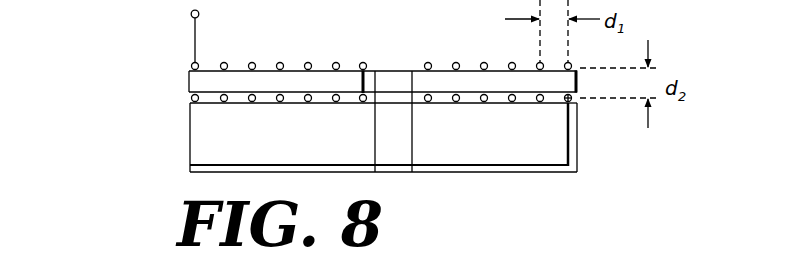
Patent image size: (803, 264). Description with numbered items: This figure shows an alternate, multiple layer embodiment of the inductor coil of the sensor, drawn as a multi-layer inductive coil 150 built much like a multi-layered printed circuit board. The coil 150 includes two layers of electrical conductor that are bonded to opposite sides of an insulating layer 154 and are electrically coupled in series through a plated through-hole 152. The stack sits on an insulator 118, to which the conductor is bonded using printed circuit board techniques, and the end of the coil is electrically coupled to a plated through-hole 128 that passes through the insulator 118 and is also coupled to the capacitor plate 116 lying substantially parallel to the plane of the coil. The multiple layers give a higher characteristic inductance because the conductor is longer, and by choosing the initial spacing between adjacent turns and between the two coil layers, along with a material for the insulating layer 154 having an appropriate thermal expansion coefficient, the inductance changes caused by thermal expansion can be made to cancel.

The multiple layer inductive coil 150 is at (156, 49).
The plated through-hole 152 is at (360, 77).
The insulating layer 154 is at (200, 79).
The plated through-hole 128 is at (563, 107).
The insulator 118 is at (543, 152).
The capacitor plate 116 is at (573, 172).